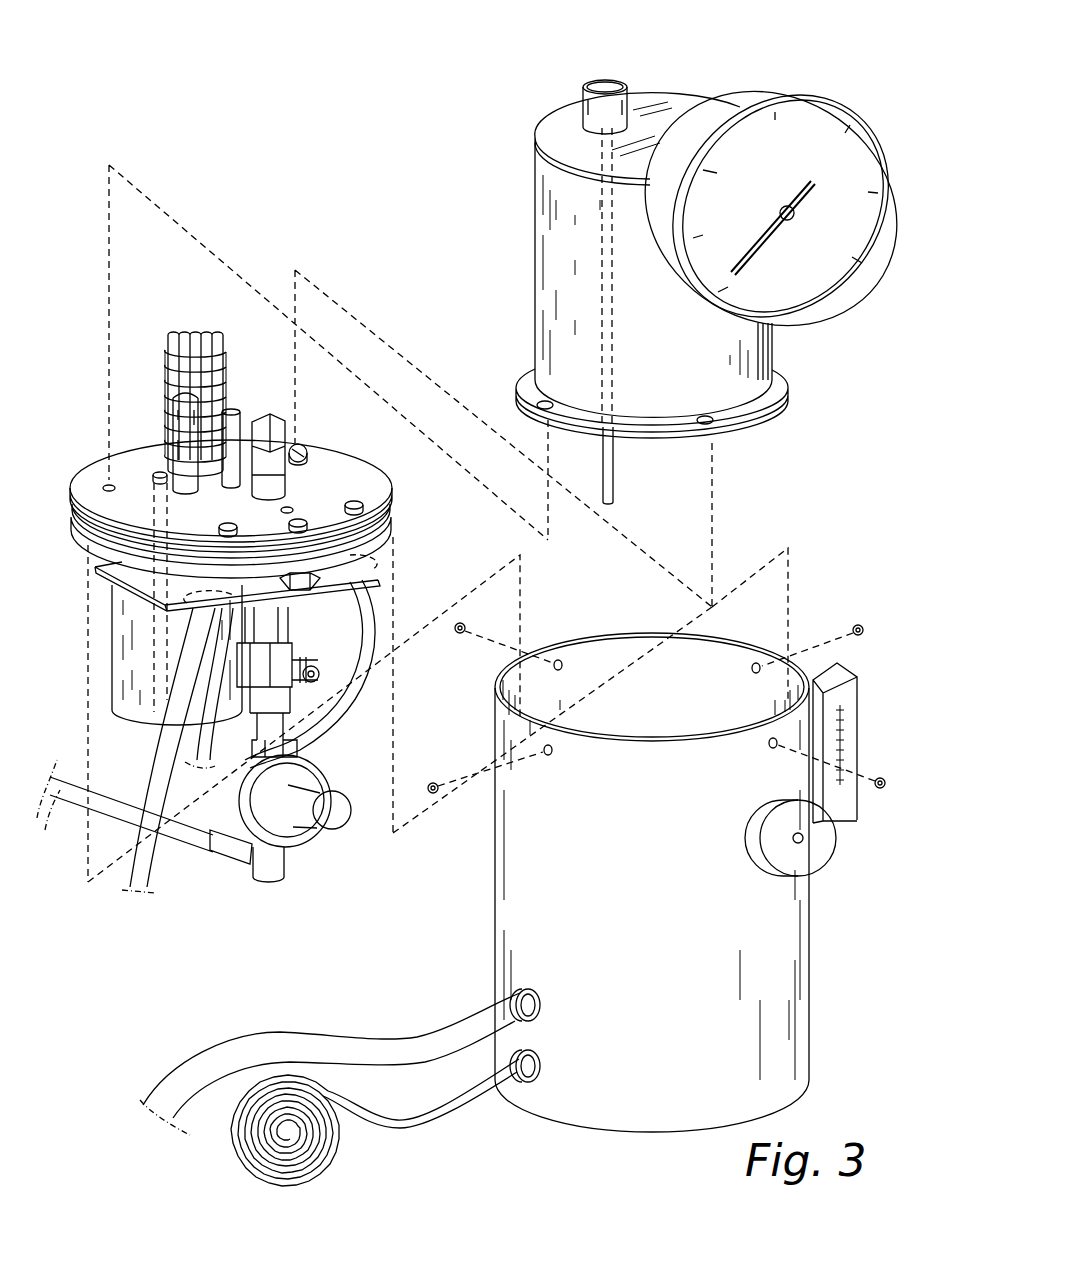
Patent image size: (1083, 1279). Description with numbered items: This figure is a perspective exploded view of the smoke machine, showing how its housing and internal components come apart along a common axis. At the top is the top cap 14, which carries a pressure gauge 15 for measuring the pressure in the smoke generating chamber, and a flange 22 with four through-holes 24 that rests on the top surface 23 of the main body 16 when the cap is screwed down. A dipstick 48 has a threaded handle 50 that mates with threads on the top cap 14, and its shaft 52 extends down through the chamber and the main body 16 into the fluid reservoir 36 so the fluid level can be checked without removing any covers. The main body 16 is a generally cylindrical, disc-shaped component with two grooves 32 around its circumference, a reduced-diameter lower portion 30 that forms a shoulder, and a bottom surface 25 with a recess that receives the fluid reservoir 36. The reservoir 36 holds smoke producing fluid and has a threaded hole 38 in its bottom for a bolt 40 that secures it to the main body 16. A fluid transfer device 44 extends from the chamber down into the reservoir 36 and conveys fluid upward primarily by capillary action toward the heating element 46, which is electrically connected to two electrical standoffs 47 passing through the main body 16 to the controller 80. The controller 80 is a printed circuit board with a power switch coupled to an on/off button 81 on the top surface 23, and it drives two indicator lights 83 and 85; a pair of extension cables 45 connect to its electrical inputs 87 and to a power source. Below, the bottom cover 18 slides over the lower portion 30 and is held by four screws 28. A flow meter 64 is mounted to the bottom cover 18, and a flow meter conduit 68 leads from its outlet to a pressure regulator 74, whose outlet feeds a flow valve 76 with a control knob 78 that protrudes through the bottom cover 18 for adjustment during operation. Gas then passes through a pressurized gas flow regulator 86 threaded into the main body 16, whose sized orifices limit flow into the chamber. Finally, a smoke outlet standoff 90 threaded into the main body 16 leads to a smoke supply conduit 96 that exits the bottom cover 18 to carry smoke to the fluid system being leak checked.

The top cap 14 is at (522, 282).
The pressure gauge 15 is at (805, 323).
The main body 16 is at (375, 473).
The bottom cover 18 is at (810, 975).
The flange 22 is at (790, 408).
The top surface 23 is at (318, 452).
The through-holes 24 is at (538, 404).
The bottom surface 25 is at (390, 524).
The screws 28 is at (432, 782).
The lower portion 30 is at (378, 552).
The grooves 32 is at (112, 527).
The fluid reservoir 36 is at (110, 697).
The threaded hole 38 is at (153, 726).
The bolt 40 is at (155, 645).
The fluid transfer device 44 is at (185, 332).
The extension cables 45 is at (210, 764).
The heating element 46 is at (168, 355).
The electrical standoffs 47 is at (182, 428).
The dipstick 48 is at (583, 100).
The handle 50 is at (603, 68).
The shaft 52 is at (615, 476).
The flow meter 64 is at (857, 805).
The flow meter conduit 68 is at (75, 805).
The pressure regulator 74 is at (307, 838).
The flow valve 76 is at (308, 650).
The control knob 78 is at (815, 868).
The controller 80 is at (140, 577).
The on/off button 81 is at (306, 520).
The indicator light 83 is at (219, 528).
The indicator light 85 is at (366, 502).
The pressurized gas flow regulator 86 is at (268, 417).
The electrical inputs 87 is at (403, 600).
The smoke outlet standoff 90 is at (231, 410).
The smoke supply conduit 96 is at (150, 800).